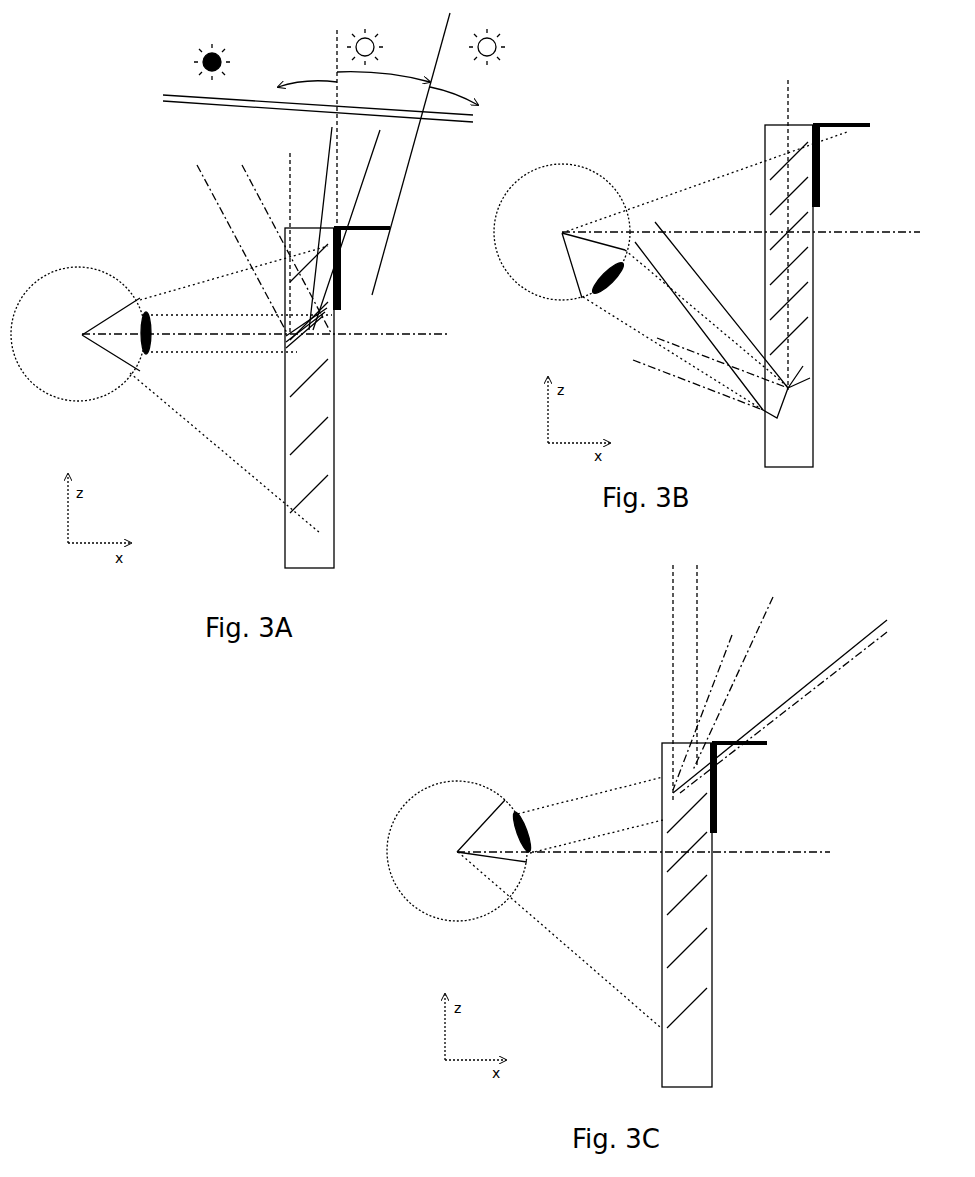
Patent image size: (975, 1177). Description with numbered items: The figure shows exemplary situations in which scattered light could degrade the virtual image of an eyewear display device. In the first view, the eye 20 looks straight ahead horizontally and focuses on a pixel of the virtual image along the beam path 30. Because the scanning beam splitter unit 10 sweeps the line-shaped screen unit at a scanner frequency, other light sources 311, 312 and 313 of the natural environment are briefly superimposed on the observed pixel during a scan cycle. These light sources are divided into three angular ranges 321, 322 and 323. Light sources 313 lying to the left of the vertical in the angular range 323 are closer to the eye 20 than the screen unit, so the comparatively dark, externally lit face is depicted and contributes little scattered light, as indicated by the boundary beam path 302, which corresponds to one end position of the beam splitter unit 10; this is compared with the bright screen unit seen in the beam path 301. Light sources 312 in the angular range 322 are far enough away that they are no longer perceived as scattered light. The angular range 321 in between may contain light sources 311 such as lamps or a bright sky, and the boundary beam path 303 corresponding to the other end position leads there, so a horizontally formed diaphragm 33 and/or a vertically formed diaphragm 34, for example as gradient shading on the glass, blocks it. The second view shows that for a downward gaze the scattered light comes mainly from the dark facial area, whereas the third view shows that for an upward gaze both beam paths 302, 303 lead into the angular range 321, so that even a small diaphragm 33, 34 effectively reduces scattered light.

In FIG. 3A, the beam splitter unit 10 is at (310, 428).
In FIG. 3B, the beam splitter unit 10 is at (800, 270).
In FIG. 3C, the beam splitter unit 10 is at (700, 942).
In FIG. 3A, the eye 20 is at (80, 266).
In FIG. 3B, the eye 20 is at (562, 164).
In FIG. 3C, the eye 20 is at (460, 779).
In FIG. 3A, the beam path 30 is at (213, 316).
In FIG. 3B, the beam path 30 is at (637, 300).
In FIG. 3C, the beam path 30 is at (587, 803).
In FIG. 3A, the horizontally formed diaphragm 33 is at (381, 232).
In FIG. 3A, the vertically formed diaphragm 34 is at (343, 311).
In FIG. 3B, the vertically formed diaphragm 34 is at (816, 166).
In FIG. 3C, the vertically formed diaphragm 34 is at (713, 788).
In FIG. 3A, the beam path 301 is at (334, 113).
In FIG. 3B, the beam path 301 is at (790, 94).
In FIG. 3C, the beam path 301 is at (700, 585).
In FIG. 3A, the boundary beam path 302 is at (263, 183).
In FIG. 3B, the boundary beam path 302 is at (654, 338).
In FIG. 3C, the boundary beam path 302 is at (757, 642).
In FIG. 3A, the boundary beam path 303 is at (372, 152).
In FIG. 3B, the boundary beam path 303 is at (692, 268).
In FIG. 3C, the boundary beam path 303 is at (863, 641).
In FIG. 3A, the light source 311 is at (375, 41).
In FIG. 3A, the light source 312 is at (496, 40).
In FIG. 3A, the light source 313 is at (208, 52).
In FIG. 3A, the angular range 321 is at (318, 97).
In FIG. 3A, the angular range 322 is at (425, 154).
In FIG. 3A, the angular range 323 is at (306, 71).